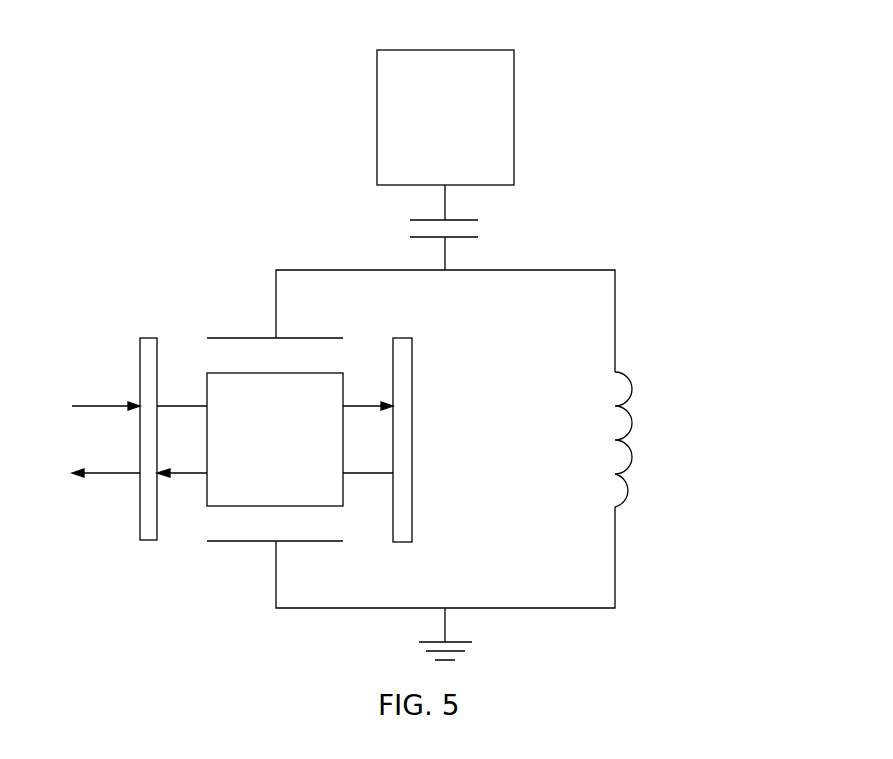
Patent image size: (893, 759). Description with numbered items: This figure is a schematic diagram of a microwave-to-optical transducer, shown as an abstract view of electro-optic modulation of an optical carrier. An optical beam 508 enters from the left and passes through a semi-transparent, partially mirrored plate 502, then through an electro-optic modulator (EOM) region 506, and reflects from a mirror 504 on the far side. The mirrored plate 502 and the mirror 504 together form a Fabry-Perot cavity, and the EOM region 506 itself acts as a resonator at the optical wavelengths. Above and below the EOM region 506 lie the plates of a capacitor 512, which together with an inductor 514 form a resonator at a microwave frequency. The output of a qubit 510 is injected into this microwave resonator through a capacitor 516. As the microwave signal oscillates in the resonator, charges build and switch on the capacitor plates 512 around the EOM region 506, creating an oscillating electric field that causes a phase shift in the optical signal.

The semi-transparent, partially mirrored plate 502 is at (150, 338).
The mirror 504 is at (413, 440).
The electro-optic modulator (EOM) region 506 is at (275, 439).
The optical beam 508 is at (107, 405).
The qubit 510 is at (445, 117).
The capacitor 512 is at (245, 338).
The inductor 514 is at (650, 440).
The capacitor 516 is at (479, 232).